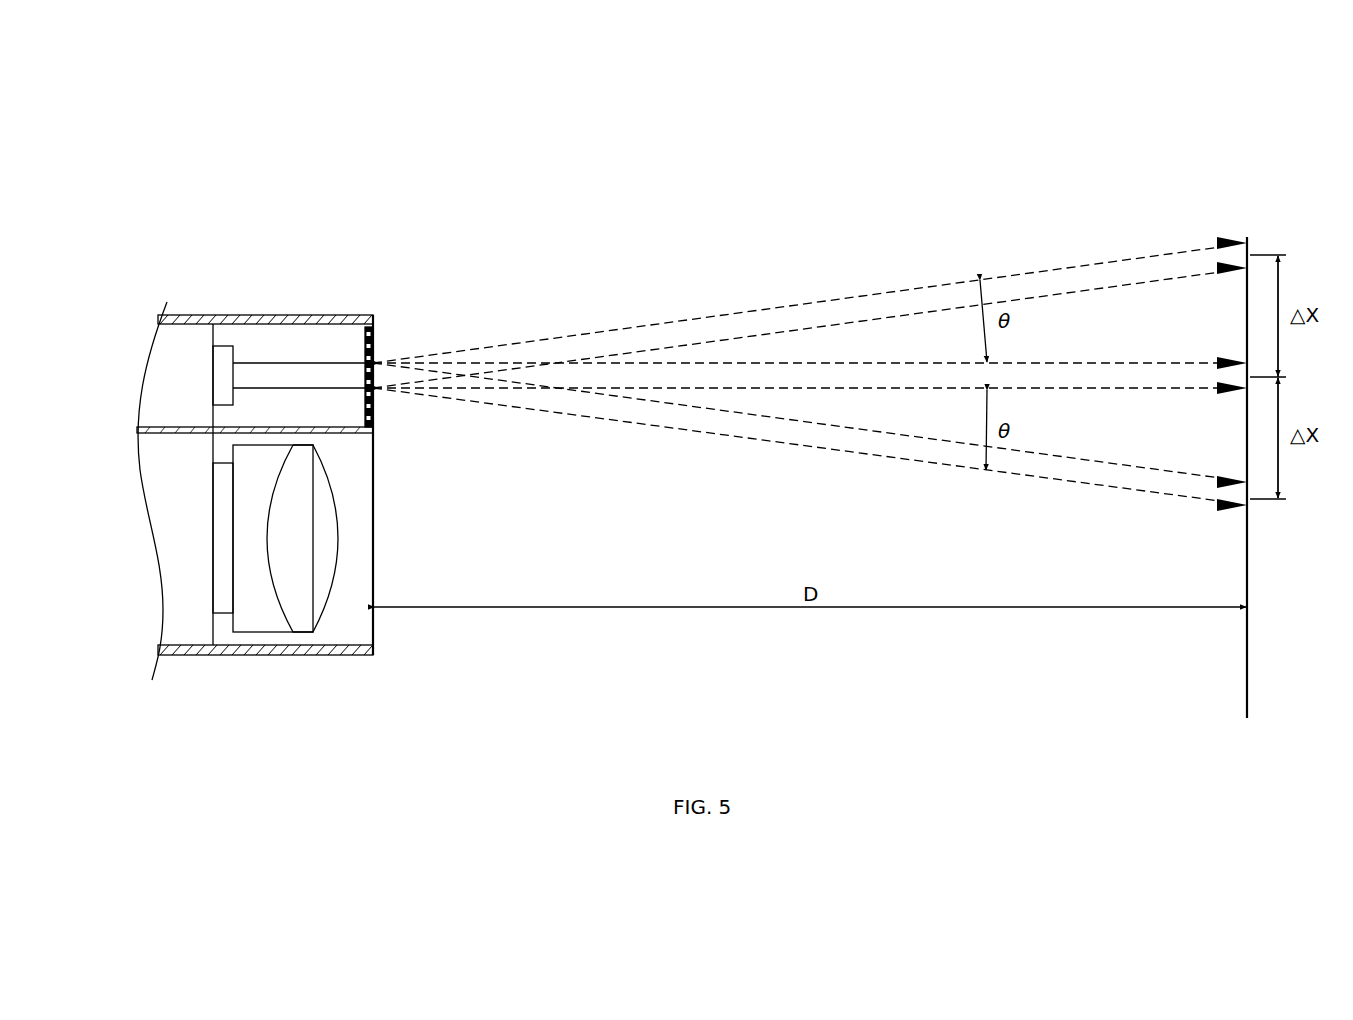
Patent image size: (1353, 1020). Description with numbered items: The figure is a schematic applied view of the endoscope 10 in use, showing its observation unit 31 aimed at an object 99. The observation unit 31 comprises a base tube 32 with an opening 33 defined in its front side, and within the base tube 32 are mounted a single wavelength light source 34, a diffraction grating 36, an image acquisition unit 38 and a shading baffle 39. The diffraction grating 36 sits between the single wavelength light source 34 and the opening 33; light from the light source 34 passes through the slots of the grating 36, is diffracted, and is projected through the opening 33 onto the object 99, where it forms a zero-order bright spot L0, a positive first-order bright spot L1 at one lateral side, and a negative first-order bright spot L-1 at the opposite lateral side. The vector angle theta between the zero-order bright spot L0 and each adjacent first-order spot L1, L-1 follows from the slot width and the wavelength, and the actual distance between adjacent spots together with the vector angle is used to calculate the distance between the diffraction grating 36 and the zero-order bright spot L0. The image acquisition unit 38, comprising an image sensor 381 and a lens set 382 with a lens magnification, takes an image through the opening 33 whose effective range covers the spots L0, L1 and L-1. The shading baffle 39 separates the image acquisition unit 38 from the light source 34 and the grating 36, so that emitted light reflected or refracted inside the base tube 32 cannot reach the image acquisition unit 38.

The endoscope 10 is at (217, 170).
The observation unit 31 is at (300, 311).
The base tube 32 is at (194, 315).
The opening 33 is at (380, 528).
The single wavelength light source 34 is at (224, 346).
The diffraction grating 36 is at (374, 332).
The image acquisition unit 38 is at (207, 722).
The image sensor 381 is at (222, 615).
The lens set 382 is at (274, 632).
The shading baffle 39 is at (328, 433).
The object 99 is at (1247, 672).
The zero-order bright spot L0 is at (1213, 377).
The positive first-order bright spot L1 is at (1213, 255).
The negative first-order bright spot L-1 is at (1197, 497).